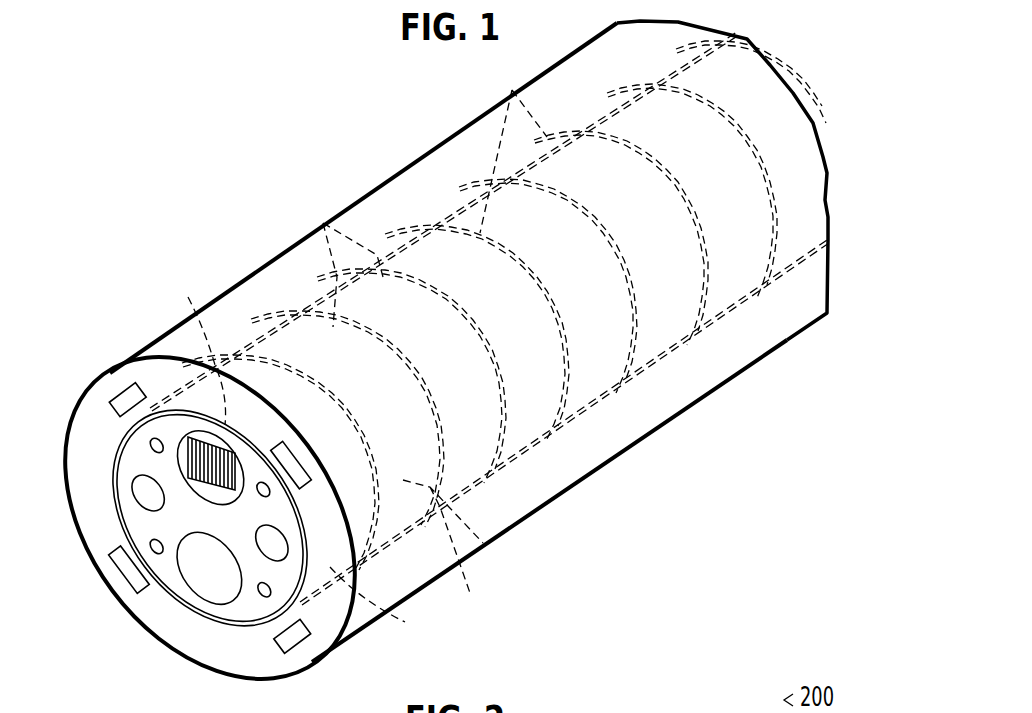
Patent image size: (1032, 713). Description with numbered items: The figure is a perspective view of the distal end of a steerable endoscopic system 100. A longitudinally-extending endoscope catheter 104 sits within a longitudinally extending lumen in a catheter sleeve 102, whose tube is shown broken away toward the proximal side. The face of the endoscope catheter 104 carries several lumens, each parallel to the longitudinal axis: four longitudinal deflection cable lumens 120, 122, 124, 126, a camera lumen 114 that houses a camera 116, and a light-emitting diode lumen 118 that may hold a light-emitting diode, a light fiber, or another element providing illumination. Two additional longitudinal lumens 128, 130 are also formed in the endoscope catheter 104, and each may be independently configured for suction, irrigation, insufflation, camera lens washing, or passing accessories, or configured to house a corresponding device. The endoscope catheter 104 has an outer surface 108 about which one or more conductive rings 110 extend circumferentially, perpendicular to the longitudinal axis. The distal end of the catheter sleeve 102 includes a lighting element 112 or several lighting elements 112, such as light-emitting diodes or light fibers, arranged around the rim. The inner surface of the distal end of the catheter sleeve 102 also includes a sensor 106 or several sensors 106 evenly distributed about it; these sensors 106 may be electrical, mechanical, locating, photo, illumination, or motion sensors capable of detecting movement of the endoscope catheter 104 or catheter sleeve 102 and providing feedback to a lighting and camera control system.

The steerable endoscopic system 100 is at (127, 252).
The catheter sleeve 102 is at (371, 206).
The endoscope catheter 104 is at (213, 613).
The sensor 106 is at (408, 628).
The outer surface 108 is at (490, 547).
The conductive ring 110 is at (323, 222).
The lighting element 112 is at (108, 404).
The camera lumen 114 is at (118, 398).
The camera 116 is at (181, 440).
The light-emitting diode lumen 118 is at (132, 495).
The deflection cable lumen 120 is at (149, 447).
The deflection cable lumen 122 is at (150, 546).
The deflection cable lumen 124 is at (267, 480).
The deflection cable lumen 126 is at (259, 598).
The additional longitudinal lumen 128 is at (190, 592).
The additional longitudinal lumen 130 is at (286, 562).